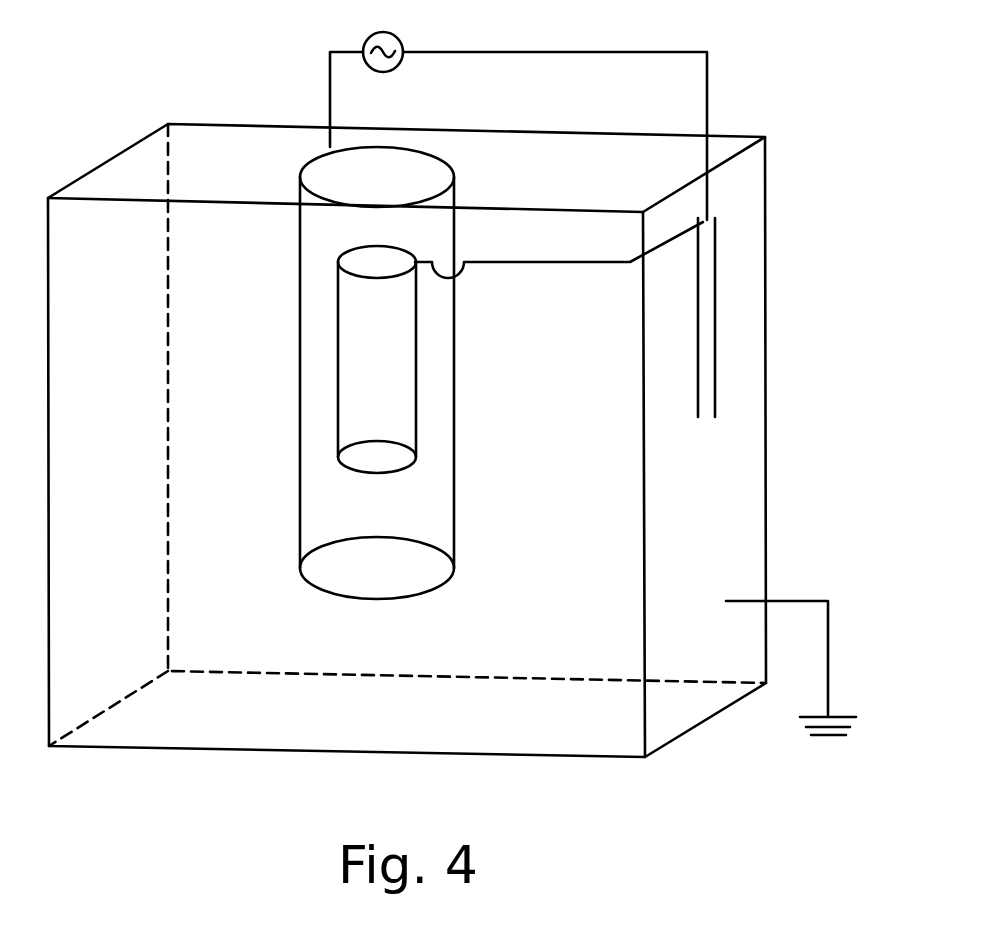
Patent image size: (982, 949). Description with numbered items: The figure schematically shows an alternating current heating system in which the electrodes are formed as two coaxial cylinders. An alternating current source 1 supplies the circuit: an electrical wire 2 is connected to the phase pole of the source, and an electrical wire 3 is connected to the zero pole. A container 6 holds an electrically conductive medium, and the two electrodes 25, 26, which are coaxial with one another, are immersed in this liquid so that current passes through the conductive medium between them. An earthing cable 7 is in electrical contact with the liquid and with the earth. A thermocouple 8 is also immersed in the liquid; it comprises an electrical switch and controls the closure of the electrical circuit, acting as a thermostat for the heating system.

The alternating current source 1 is at (399, 42).
The electrical wire 2 is at (510, 52).
The electrical wire 3 is at (328, 88).
The container 6 is at (765, 362).
The earthing cable 7 is at (780, 600).
The thermocouple 8 is at (705, 311).
The electrode 25 is at (453, 437).
The electrode 26 is at (415, 346).